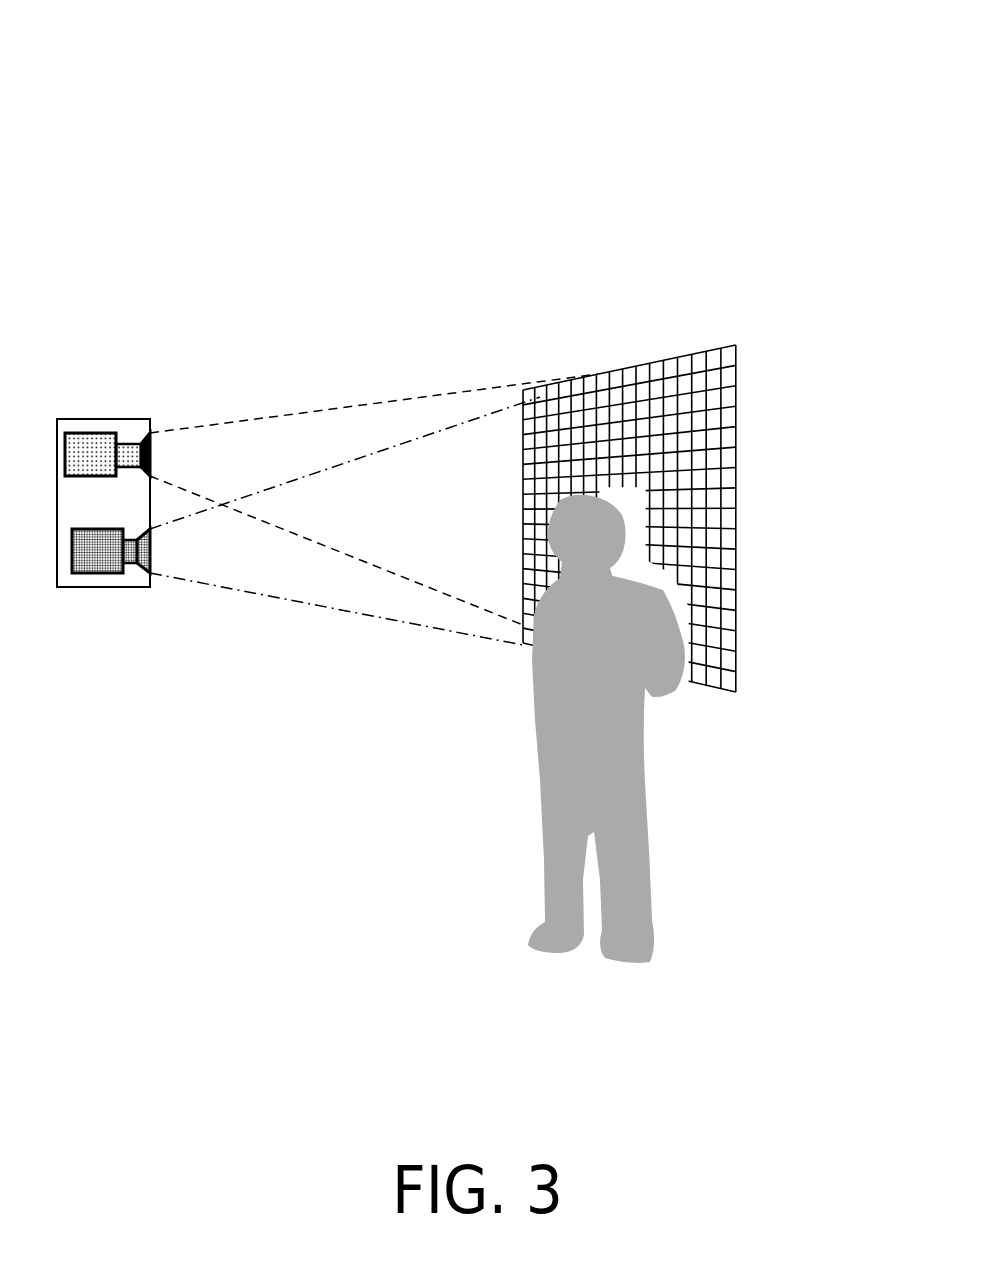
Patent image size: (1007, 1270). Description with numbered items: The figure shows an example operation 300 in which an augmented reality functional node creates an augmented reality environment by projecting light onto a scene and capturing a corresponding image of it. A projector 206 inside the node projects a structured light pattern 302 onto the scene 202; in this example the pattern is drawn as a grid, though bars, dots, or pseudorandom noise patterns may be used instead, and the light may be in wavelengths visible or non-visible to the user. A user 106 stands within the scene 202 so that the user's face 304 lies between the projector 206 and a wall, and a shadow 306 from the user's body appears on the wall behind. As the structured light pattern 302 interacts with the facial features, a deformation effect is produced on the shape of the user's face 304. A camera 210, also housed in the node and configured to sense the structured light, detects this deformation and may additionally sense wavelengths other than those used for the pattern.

The example operation 300 is at (718, 45).
The projector 206 is at (90, 455).
The camera 210 is at (110, 573).
The structured light pattern 302 is at (518, 400).
The scene 202 is at (694, 480).
The user's face 304 is at (539, 417).
The shadow 306 is at (639, 501).
The user 106 is at (601, 610).